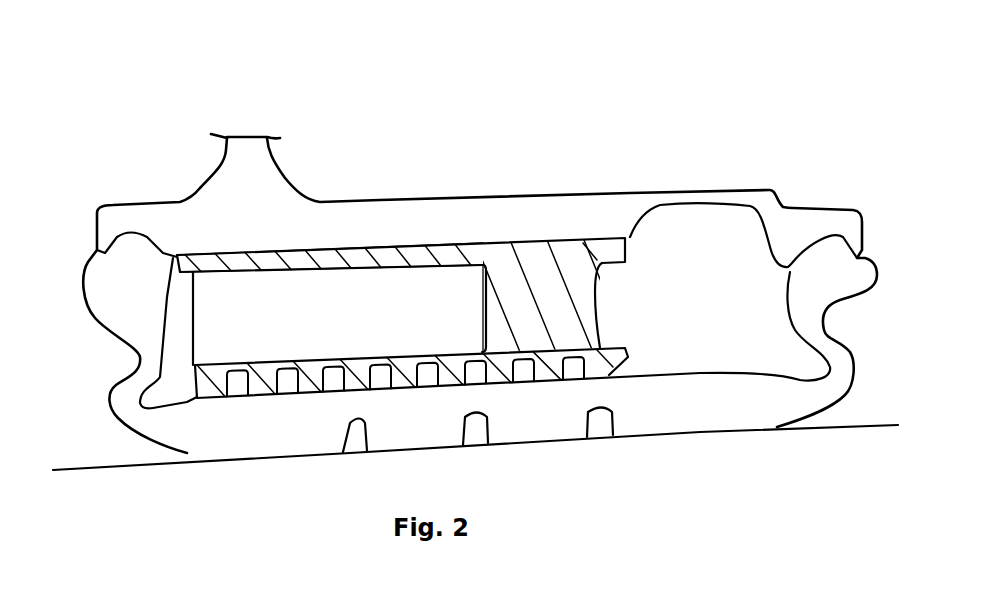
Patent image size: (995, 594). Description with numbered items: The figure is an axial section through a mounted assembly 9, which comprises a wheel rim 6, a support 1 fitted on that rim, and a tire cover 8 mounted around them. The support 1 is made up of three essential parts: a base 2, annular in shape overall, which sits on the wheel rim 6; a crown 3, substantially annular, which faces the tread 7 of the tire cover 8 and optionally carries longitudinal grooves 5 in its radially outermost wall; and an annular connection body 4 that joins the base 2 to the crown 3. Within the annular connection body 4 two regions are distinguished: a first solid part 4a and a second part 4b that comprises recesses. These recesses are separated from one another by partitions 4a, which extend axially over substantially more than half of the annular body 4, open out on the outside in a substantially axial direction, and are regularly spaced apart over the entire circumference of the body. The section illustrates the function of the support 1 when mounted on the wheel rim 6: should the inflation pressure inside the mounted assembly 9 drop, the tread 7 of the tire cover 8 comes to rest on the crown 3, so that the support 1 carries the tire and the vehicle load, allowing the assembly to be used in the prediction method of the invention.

The support 1 is at (330, 327).
The base 2 is at (327, 254).
The crown 3 is at (352, 357).
The annular connection body 4 is at (527, 275).
The solid part / partitions 4a is at (554, 327).
The second part comprising recesses 4b is at (404, 327).
The longitudinal grooves 5 is at (404, 391).
The wheel rim 6 is at (453, 222).
The tread 7 is at (673, 413).
The tire cover 8 is at (92, 329).
The mounted assembly 9 is at (346, 136).